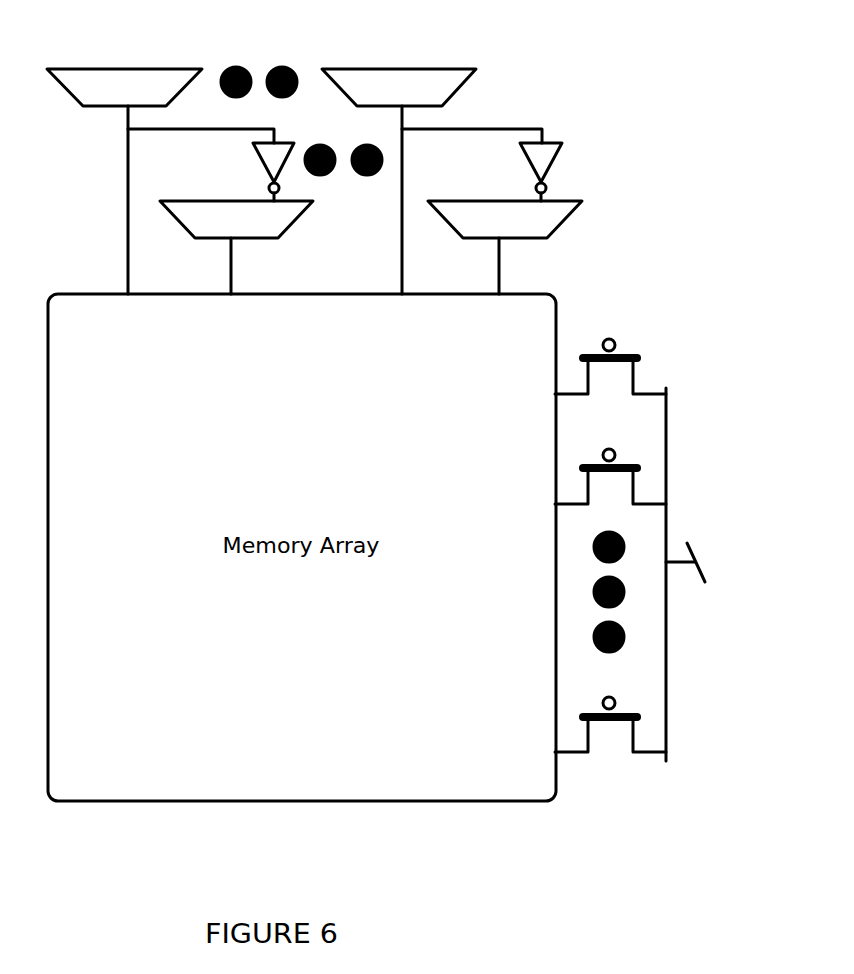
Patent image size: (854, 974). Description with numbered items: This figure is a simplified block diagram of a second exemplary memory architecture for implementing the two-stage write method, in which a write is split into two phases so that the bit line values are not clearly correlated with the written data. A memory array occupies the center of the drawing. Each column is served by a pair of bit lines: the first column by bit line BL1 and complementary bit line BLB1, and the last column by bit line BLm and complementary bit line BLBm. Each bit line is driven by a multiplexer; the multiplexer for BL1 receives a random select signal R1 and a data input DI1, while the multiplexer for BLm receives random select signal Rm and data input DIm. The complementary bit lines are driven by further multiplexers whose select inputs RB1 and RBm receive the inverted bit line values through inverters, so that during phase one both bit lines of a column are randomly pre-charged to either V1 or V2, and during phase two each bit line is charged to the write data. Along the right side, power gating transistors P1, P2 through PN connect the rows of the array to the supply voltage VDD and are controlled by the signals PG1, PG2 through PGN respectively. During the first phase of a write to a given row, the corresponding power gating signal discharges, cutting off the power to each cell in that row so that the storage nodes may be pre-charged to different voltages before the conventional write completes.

The random select signal of first bit line multiplexer R1 is at (110, 69).
The data input of first bit line multiplexer DI1 is at (176, 69).
The random select signal of m-th bit line multiplexer Rm is at (384, 69).
The data input of m-th bit line multiplexer DIm is at (452, 69).
The random select signal of first complementary bit line multiplexer RB1 is at (202, 201).
The random select signal of m-th complementary bit line multiplexer RBm is at (475, 201).
The first bit line BL1 is at (112, 200).
The first complementary bit line BLB1 is at (212, 266).
The m-th bit line BLm is at (383, 200).
The m-th complementary bit line BLBm is at (477, 266).
The first power gating signal PG1 is at (609, 339).
The second power gating signal PG2 is at (609, 449).
The N-th power gating signal PGN is at (609, 697).
The first power gating transistor P1 is at (610, 376).
The second power gating transistor P2 is at (610, 486).
The N-th power gating transistor PN is at (610, 734).
The supply voltage VDD is at (705, 562).